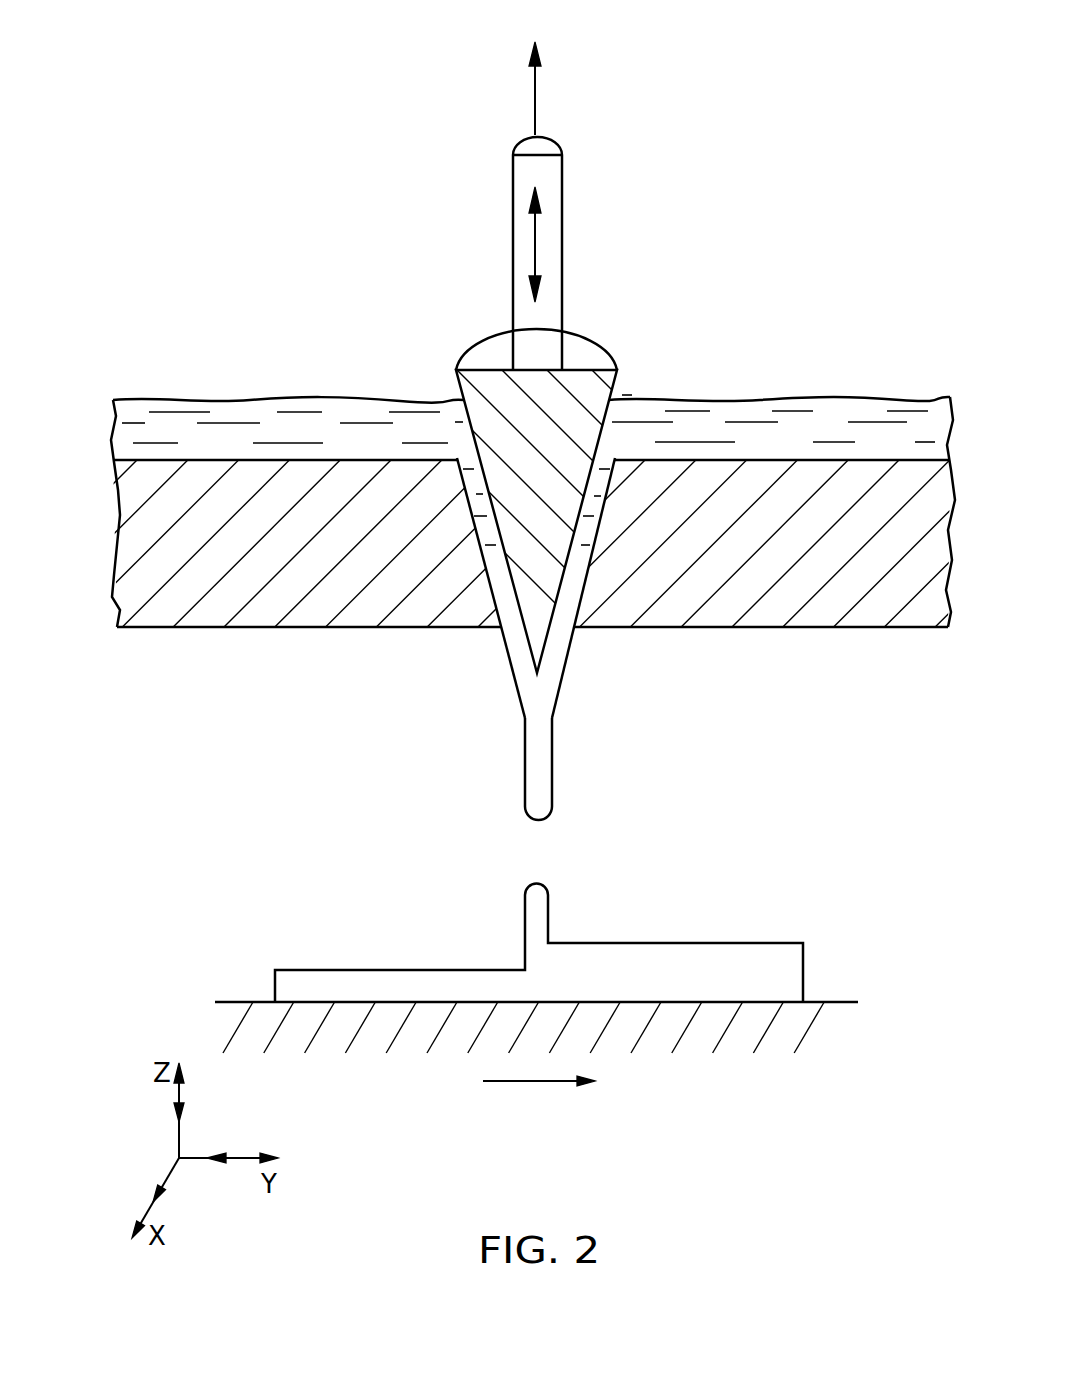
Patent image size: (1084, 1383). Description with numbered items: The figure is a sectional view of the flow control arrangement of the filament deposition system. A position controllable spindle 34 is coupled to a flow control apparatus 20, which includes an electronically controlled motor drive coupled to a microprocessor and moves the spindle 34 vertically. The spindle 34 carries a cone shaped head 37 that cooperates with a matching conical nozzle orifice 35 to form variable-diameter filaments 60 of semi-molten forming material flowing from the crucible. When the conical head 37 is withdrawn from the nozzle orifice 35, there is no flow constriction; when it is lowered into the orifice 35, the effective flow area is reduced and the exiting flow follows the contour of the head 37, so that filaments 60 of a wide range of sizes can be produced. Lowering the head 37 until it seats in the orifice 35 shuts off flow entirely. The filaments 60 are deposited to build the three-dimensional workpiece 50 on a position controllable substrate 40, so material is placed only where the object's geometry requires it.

The flow control apparatus 20 is at (534, 71).
The spindle 34 is at (592, 348).
The cone shaped head 37 is at (460, 398).
The nozzle orifice 35 is at (498, 631).
The filaments 60 is at (553, 780).
The workpiece 50 is at (803, 977).
The position controllable substrate 40 is at (807, 1028).